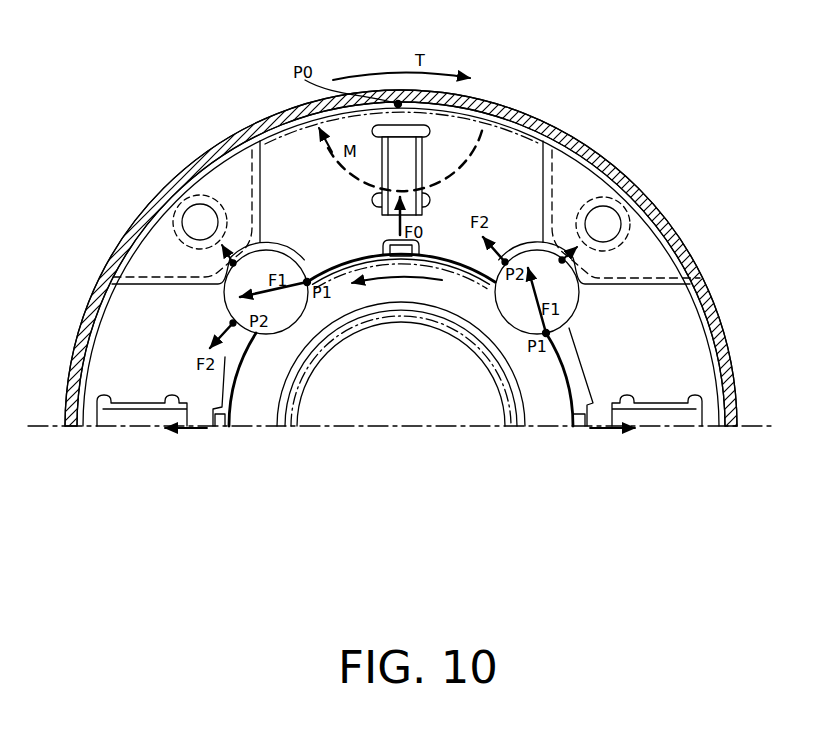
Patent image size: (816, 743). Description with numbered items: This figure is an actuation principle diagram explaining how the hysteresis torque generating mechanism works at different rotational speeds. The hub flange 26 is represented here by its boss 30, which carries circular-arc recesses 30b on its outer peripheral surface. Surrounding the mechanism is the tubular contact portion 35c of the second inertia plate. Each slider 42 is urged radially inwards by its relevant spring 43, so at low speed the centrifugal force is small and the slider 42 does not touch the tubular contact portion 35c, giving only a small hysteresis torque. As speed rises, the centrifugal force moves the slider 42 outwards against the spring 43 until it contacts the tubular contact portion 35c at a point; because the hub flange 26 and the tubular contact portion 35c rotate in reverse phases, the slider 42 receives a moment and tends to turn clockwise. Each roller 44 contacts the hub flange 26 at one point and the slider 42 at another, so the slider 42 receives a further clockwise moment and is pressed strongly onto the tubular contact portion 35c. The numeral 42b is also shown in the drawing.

The hub flange 26 is at (490, 407).
The boss 30 is at (260, 405).
The circular-arc recess 30b is at (583, 375).
The tubular contact portion 35c is at (583, 145).
The slider 42 is at (510, 145).
The support plate rim 42b is at (617, 165).
The spring 43 is at (425, 135).
The roller 44 is at (560, 292).